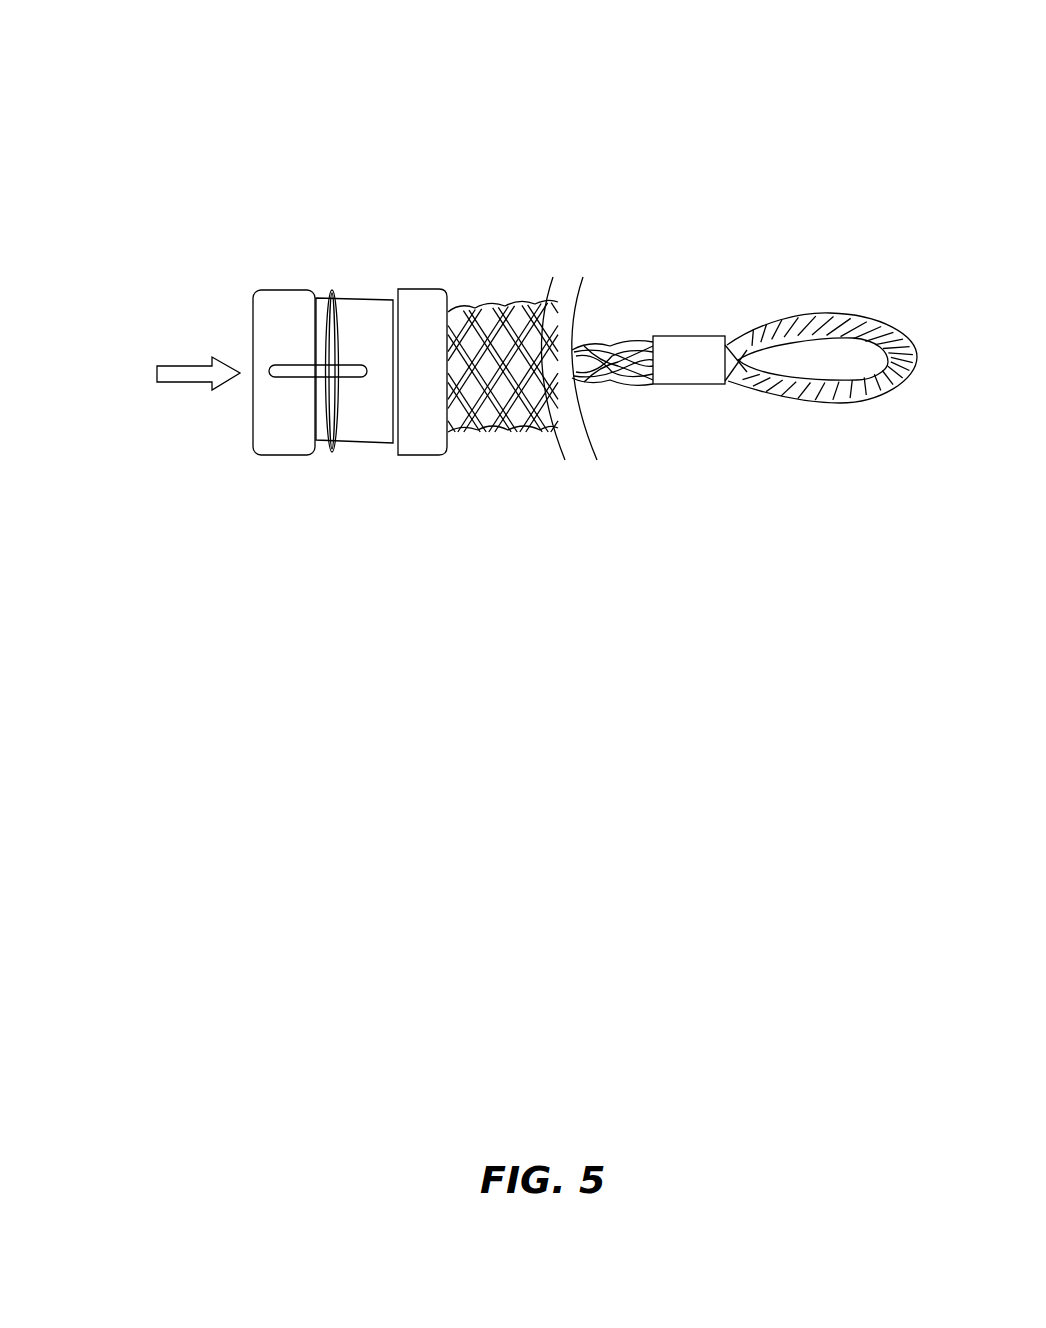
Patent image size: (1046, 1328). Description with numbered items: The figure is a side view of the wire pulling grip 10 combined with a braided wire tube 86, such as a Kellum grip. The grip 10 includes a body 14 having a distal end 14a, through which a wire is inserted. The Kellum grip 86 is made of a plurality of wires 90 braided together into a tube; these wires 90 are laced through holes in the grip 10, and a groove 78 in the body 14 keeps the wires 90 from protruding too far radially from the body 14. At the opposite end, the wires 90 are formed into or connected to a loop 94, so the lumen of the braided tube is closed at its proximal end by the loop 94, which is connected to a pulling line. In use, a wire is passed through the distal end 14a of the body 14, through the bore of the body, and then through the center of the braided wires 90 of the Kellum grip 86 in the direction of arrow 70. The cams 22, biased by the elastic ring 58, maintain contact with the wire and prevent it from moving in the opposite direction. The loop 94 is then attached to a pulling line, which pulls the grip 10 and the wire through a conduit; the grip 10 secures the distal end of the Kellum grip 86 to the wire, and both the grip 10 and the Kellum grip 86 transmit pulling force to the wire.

The wire pulling grip 10 is at (497, 115).
The body 14 is at (360, 298).
The distal end 14a is at (253, 327).
The cams 22 is at (323, 297).
The elastic ring 58 is at (332, 348).
The arrow 70 is at (157, 375).
The groove 78 is at (393, 425).
The braided wire tube 86 is at (642, 233).
The wires 90 is at (530, 430).
The loop 94 is at (842, 390).